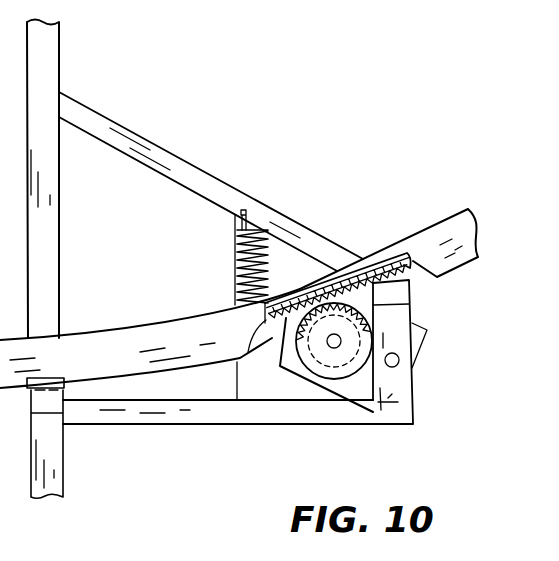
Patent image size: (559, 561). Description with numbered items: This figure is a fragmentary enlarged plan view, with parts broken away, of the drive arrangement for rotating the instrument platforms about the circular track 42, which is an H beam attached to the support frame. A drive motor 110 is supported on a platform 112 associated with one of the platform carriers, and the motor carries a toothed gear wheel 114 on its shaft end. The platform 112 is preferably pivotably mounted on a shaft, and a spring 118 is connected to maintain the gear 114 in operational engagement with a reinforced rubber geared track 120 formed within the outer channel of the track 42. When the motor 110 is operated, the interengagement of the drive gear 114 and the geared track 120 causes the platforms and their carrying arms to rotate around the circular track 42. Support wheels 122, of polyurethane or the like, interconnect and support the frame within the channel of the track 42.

The circular track 42 is at (383, 257).
The drive motor 110 is at (332, 343).
The platform 112 is at (352, 388).
The toothed gear wheel 114 is at (347, 318).
The spring 118 is at (234, 253).
The reinforced rubber geared track 120 is at (253, 349).
The support wheels 122 is at (53, 377).